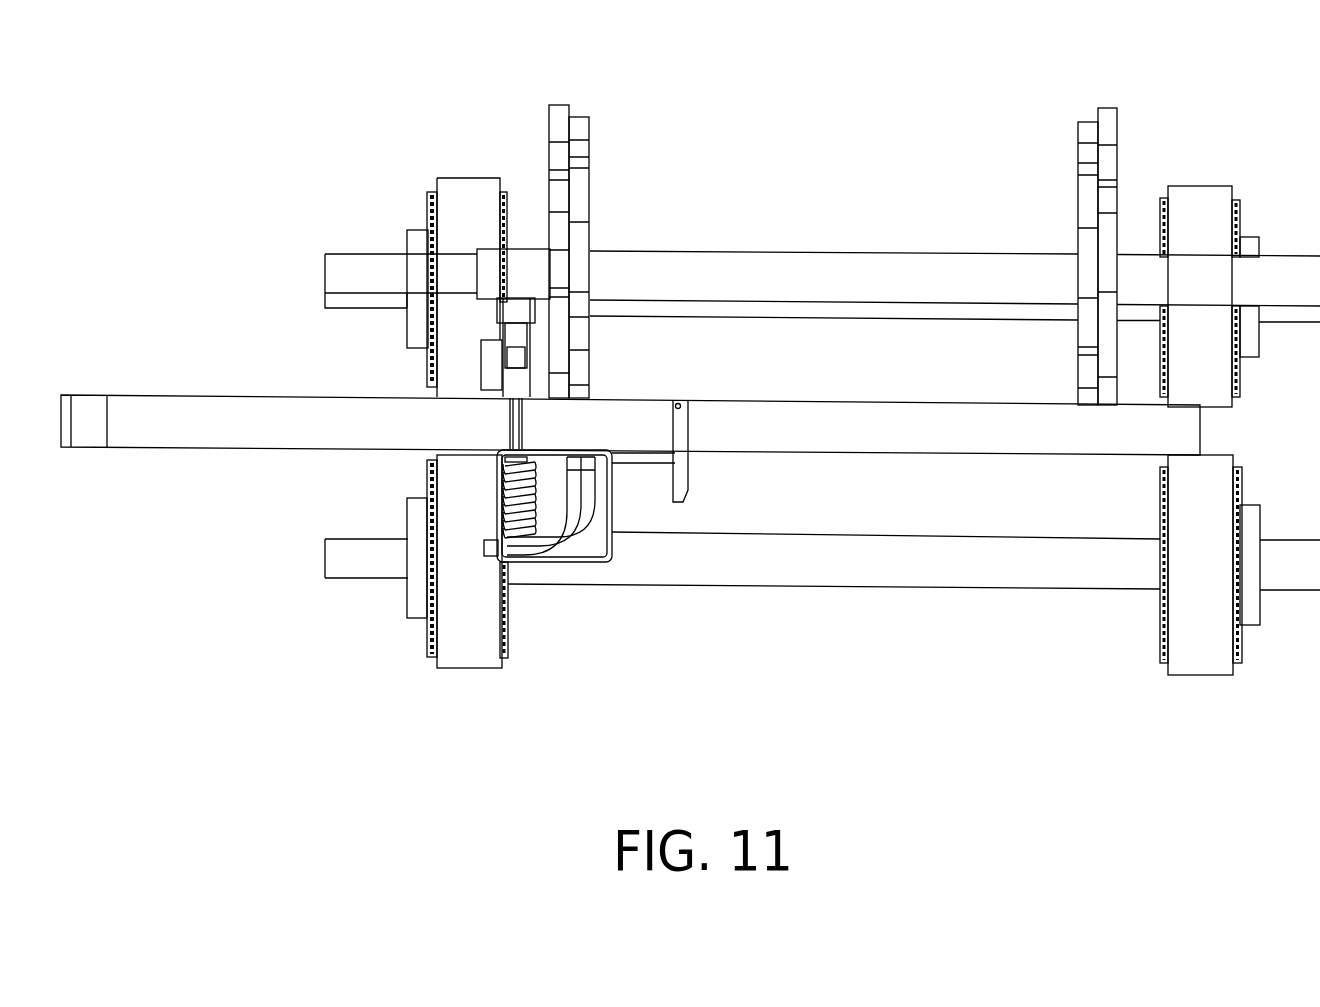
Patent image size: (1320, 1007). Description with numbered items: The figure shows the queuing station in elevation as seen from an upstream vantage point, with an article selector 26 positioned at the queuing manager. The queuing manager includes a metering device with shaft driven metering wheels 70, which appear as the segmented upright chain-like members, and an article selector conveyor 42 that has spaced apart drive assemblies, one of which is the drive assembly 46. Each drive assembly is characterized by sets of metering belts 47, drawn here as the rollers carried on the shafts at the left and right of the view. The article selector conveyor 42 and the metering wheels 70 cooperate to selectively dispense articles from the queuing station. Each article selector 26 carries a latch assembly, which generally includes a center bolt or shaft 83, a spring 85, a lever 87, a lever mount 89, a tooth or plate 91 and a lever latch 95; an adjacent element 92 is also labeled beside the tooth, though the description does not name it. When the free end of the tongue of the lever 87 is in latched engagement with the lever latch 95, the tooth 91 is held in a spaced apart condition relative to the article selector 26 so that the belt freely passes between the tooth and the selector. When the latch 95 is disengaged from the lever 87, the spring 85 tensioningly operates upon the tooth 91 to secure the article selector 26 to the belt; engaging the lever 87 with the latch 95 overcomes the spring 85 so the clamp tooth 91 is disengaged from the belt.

The article selector 26 is at (188, 438).
The article selector conveyor 42 is at (355, 500).
The drive assembly 46 is at (411, 642).
The metering belts 47 is at (492, 639).
The metering wheels 70 is at (580, 125).
The center bolt/shaft 83 is at (518, 507).
The spring 85 is at (528, 482).
The lever 87 is at (642, 465).
The lever mount 89 is at (607, 563).
The tooth 91 is at (482, 363).
The plunger 92 is at (517, 382).
The lever latch 95 is at (688, 488).